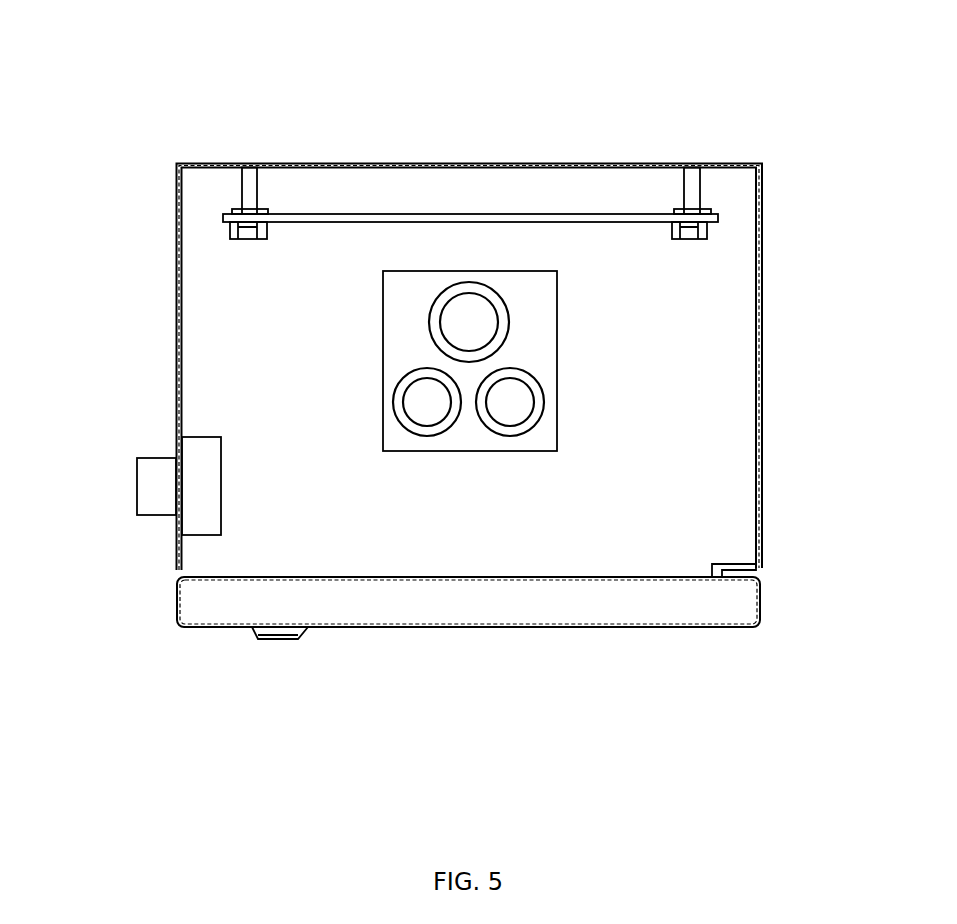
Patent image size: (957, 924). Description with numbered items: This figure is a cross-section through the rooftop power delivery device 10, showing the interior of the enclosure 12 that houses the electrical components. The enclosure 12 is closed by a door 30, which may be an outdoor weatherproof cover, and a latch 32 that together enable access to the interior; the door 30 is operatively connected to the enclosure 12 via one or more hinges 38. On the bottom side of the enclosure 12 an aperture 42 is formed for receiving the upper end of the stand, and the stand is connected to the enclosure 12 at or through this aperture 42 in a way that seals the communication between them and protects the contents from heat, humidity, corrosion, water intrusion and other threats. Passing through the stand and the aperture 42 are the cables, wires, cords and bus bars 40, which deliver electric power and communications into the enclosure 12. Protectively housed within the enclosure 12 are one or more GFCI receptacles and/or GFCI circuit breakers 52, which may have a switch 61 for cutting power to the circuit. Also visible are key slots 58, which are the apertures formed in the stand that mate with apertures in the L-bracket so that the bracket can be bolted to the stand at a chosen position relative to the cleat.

The rooftop power delivery device 10 is at (359, 52).
The enclosure 12 is at (176, 423).
The door 30 is at (632, 628).
The latch 32 is at (280, 641).
The hinge 38 is at (746, 571).
The cables, wires, cords and bus bars 40 is at (452, 378).
The aperture 42 is at (391, 327).
The GFCI receptacle and/or GFCI circuit breaker 52 is at (222, 484).
The key slot 58 is at (453, 214).
The switch 61 is at (137, 487).